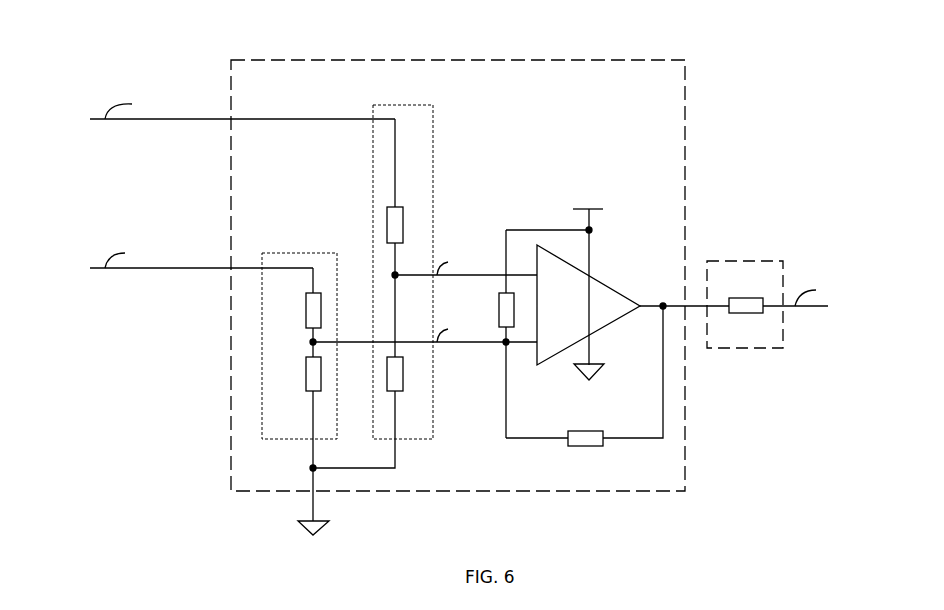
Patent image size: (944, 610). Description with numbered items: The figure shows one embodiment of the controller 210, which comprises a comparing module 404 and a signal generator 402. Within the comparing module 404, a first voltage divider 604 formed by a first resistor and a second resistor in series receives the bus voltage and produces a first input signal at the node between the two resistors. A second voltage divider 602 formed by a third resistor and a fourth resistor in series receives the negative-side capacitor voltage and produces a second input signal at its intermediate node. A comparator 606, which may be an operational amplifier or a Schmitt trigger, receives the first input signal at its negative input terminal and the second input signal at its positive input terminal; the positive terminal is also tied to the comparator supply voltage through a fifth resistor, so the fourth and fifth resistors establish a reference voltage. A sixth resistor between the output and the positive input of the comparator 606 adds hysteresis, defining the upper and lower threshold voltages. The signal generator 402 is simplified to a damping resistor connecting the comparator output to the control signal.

The controller 210 is at (130, 51).
The comparing module 404 is at (470, 60).
The first voltage divider 604 is at (388, 104).
The second voltage divider 602 is at (278, 251).
The comparator 606 is at (634, 260).
The signal generator 402 is at (715, 260).